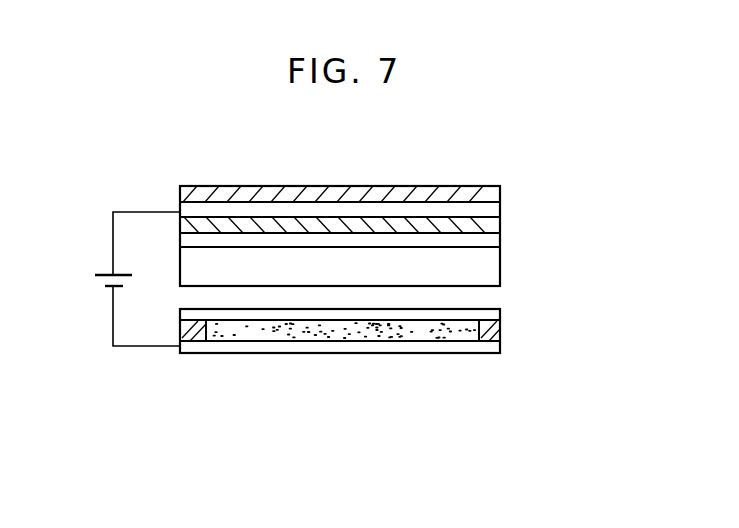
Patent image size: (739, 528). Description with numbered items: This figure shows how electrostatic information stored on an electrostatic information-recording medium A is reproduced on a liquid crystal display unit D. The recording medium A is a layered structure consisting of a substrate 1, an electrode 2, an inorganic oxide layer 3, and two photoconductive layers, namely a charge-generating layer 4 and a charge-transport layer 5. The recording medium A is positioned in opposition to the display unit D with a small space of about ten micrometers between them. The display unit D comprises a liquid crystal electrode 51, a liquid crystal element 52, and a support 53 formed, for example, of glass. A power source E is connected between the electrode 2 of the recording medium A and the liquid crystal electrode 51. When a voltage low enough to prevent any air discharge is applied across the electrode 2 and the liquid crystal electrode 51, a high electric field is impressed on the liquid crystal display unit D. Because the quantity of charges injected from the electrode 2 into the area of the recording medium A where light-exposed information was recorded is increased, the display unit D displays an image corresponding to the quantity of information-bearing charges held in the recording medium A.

The electrostatic information-recording medium A is at (202, 180).
The substrate 1 is at (500, 193).
The electrode 2 is at (497, 209).
The inorganic oxide layer 3 is at (497, 219).
The charge-generating layer 4 is at (497, 238).
The charge-transport layer 5 is at (497, 264).
The power source E is at (123, 279).
The liquid crystal display unit D is at (222, 361).
The liquid crystal electrode 51 is at (507, 344).
The liquid crystal element 52 is at (448, 330).
The support 53 is at (192, 309).